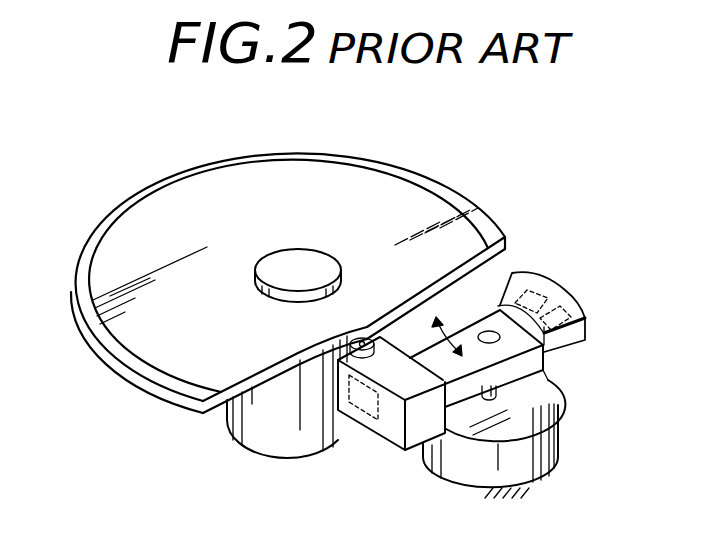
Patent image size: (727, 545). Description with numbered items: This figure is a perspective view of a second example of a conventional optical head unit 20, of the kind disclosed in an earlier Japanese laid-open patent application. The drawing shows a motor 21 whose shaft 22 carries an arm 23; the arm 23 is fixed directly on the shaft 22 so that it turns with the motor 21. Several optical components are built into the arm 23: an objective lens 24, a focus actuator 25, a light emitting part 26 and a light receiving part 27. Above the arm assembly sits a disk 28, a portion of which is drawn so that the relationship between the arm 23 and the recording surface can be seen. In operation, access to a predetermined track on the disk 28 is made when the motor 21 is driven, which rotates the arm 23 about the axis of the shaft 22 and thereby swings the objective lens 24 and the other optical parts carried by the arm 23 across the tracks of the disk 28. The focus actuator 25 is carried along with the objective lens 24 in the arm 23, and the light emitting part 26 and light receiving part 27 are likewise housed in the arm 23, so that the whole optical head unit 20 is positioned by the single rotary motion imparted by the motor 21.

The optical head unit 20 is at (615, 208).
The motor 21 is at (562, 437).
The shaft 22 is at (540, 382).
The arm 23 is at (470, 392).
The objective lens 24 is at (372, 338).
The focus actuator 25 is at (360, 420).
The light emitting part 26 is at (538, 288).
The light receiving part 27 is at (583, 304).
The disk 28 is at (395, 166).